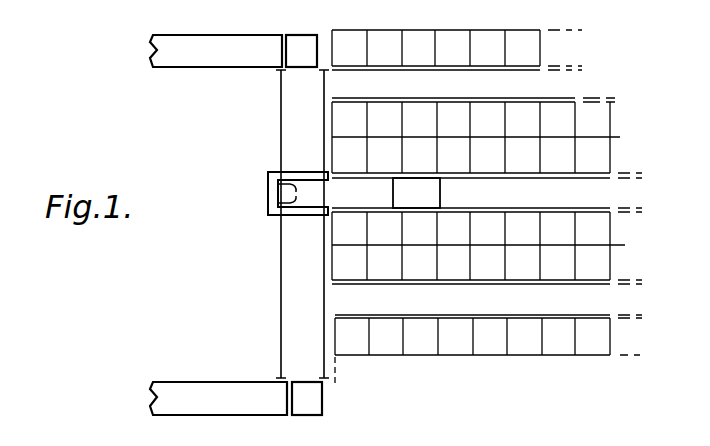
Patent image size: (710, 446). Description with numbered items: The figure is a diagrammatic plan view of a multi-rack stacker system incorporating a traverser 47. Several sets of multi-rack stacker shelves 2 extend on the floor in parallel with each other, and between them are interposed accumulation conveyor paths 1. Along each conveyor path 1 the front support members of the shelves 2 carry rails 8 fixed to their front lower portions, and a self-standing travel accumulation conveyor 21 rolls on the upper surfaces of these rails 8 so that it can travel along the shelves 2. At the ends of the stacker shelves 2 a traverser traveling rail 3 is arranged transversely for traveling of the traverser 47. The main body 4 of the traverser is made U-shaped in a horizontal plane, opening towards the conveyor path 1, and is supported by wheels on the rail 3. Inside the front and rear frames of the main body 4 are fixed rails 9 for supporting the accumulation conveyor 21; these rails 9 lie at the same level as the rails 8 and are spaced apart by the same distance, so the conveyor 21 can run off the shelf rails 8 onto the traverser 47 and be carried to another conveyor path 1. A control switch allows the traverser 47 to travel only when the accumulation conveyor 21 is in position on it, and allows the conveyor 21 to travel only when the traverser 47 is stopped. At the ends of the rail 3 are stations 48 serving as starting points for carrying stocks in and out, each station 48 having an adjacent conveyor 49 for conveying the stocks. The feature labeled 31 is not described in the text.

The accumulation conveyor path 1 is at (535, 90).
The multi-rack stacker shelves 2 is at (618, 148).
The traverser traveling rail 3 is at (325, 315).
The main body of the traverser 4 is at (270, 172).
The rails 8 is at (428, 70).
The rails 9 is at (280, 198).
The self-standing travel accumulation conveyor 21 is at (440, 200).
The column post 31 is at (281, 283).
The traverser 47 is at (268, 222).
The station 48 is at (297, 55).
The conveyor 49 is at (178, 57).